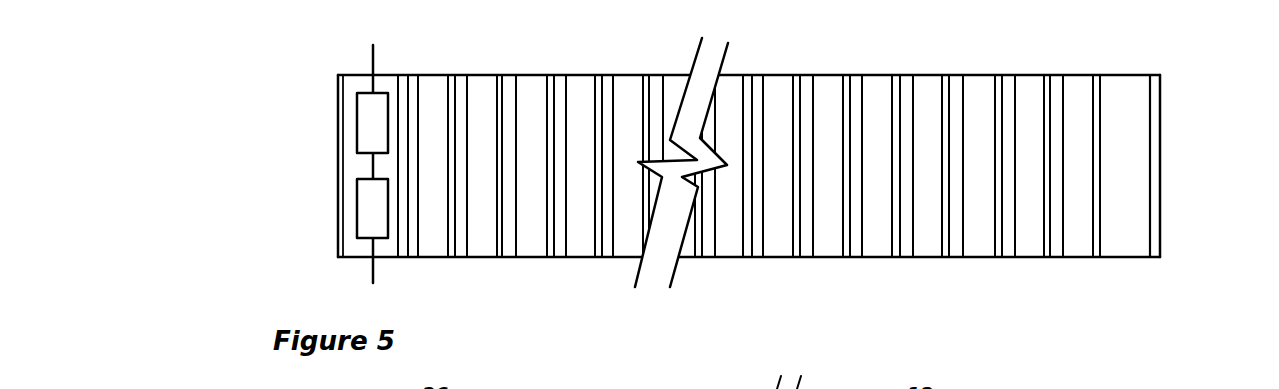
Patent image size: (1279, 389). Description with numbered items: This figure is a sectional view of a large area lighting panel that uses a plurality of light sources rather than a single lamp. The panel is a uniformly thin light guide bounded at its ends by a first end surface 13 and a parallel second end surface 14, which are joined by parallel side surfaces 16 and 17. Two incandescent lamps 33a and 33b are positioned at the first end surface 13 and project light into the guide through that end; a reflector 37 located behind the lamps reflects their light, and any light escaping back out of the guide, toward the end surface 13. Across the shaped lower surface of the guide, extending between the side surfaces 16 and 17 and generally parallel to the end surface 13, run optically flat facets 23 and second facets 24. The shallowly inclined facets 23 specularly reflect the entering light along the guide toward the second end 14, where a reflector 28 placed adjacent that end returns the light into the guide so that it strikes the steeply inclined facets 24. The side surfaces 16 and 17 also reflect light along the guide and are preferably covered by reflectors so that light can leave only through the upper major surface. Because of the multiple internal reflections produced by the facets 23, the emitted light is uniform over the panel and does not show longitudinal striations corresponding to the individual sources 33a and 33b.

The first end surface 13 is at (401, 233).
The second end surface 14 is at (1150, 190).
The side surface 16 is at (527, 73).
The side surface 17 is at (729, 258).
The optically flat facets 23 is at (485, 247).
The second facets 24 is at (602, 245).
The reflector 28 is at (1153, 142).
The incandescent lamp 33a is at (388, 123).
The incandescent lamp 33b is at (355, 211).
The reflector 37 is at (336, 152).